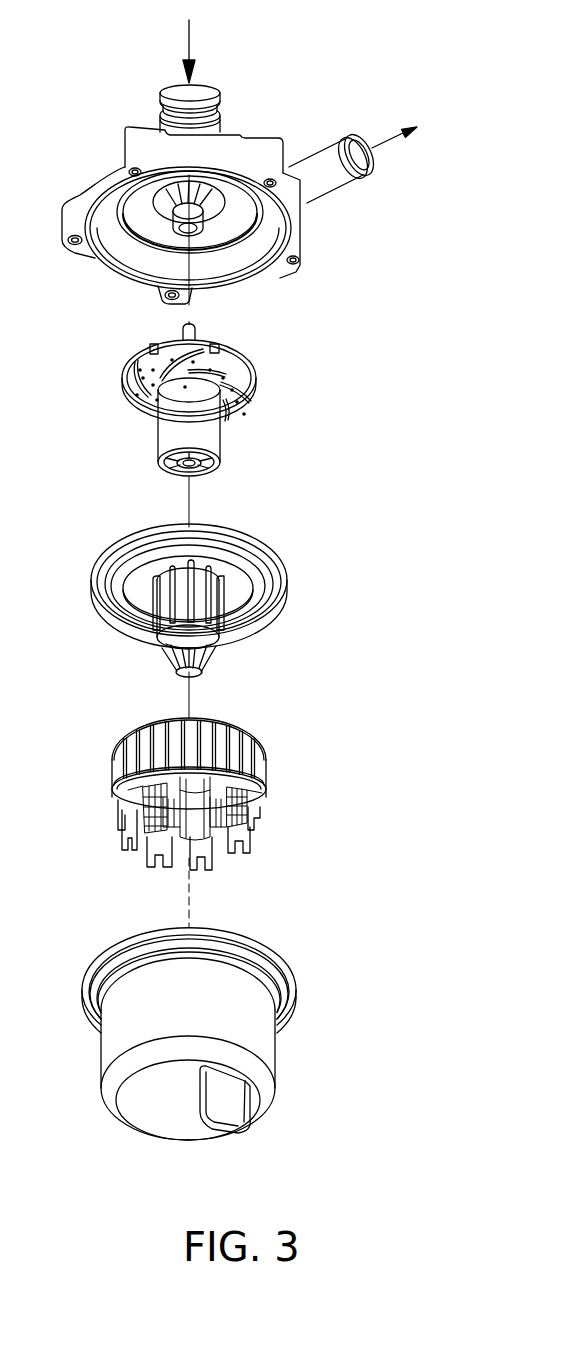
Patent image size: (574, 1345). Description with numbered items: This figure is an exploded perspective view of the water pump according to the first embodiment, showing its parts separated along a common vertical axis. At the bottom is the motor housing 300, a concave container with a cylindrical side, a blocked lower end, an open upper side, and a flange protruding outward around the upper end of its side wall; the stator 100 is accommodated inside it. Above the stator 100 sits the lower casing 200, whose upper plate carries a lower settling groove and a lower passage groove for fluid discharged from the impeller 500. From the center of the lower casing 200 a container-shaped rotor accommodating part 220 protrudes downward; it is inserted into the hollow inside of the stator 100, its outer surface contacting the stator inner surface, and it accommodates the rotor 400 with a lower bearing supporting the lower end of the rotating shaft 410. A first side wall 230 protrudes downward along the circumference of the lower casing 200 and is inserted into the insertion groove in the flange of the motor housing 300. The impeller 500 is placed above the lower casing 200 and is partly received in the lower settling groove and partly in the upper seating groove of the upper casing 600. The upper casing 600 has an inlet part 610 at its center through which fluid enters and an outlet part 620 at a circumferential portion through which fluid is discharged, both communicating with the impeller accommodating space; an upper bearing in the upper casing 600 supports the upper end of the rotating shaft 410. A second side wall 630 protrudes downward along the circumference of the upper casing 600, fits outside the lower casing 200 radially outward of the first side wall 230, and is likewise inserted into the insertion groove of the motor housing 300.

The stator 100 is at (262, 742).
The lower casing 200 is at (272, 553).
The rotor accommodating part 220 is at (200, 600).
The first side wall 230 is at (250, 633).
The motor housing 300 is at (257, 1051).
The rotor 400 is at (210, 435).
The rotating shaft 410 is at (183, 327).
The impeller 500 is at (257, 395).
The upper casing 600 is at (253, 137).
The inlet part 610 is at (165, 90).
The outlet part 620 is at (330, 193).
The second side wall 630 is at (250, 265).